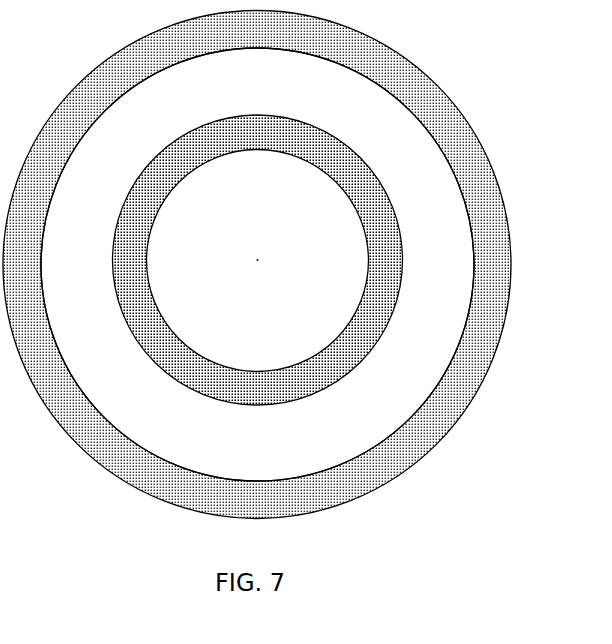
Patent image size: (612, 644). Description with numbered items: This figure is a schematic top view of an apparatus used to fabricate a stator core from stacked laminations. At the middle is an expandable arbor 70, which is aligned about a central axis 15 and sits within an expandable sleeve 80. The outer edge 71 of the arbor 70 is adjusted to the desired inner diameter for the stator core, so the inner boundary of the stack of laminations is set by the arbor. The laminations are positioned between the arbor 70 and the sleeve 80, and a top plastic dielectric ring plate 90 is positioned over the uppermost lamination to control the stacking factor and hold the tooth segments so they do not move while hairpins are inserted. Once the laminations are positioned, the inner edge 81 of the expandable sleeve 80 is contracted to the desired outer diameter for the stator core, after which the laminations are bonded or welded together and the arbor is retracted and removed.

The central axis 15 is at (256, 257).
The expandable arbor 70 is at (322, 155).
The outer edge of the arbor 71 is at (382, 182).
The expandable sleeve 80 is at (480, 182).
The inner edge of the expandable sleeve 81 is at (443, 153).
The top plastic dielectric ring plate 90 is at (452, 250).